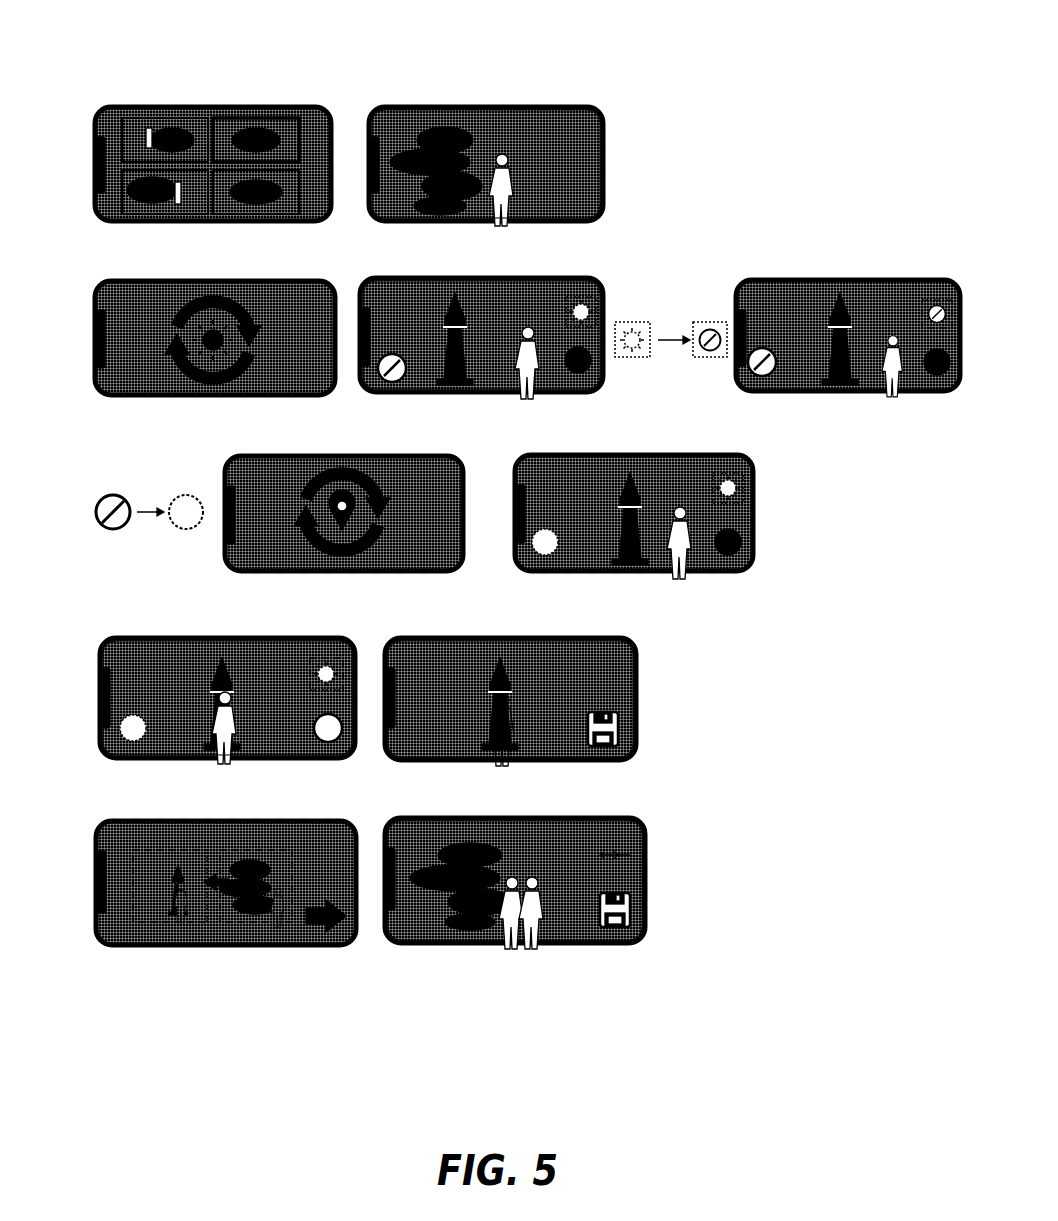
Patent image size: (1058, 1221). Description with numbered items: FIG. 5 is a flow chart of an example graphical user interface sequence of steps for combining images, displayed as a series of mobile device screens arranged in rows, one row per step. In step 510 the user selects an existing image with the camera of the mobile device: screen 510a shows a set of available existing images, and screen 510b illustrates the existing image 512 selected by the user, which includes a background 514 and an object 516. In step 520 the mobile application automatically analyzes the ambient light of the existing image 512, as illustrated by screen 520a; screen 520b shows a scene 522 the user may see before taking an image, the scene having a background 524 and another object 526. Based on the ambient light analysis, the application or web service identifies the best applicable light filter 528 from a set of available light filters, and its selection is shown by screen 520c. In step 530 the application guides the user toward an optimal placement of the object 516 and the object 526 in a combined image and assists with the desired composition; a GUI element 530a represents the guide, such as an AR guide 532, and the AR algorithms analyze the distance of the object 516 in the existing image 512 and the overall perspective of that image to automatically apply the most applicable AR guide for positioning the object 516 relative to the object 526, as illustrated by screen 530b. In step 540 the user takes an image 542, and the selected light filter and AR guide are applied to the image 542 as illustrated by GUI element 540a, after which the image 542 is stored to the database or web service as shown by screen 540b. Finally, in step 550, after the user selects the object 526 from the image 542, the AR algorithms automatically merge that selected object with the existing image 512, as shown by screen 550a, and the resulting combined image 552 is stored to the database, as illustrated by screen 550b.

The step of selecting an existing image 510 is at (90, 182).
The set of available existing images 510a is at (213, 136).
The selected existing image screen 510b is at (486, 136).
The existing image 512 is at (533, 162).
The background 514 is at (455, 133).
The object 516 is at (502, 187).
The step of ambient light analysis 520 is at (88, 348).
The ambient light analysis screen 520a is at (215, 310).
The scene preview screen 520b is at (481, 307).
The light filter selection screen 520c is at (848, 309).
The scene 522 is at (515, 307).
The background 524 is at (467, 310).
The object 526 is at (528, 332).
The light filter 528 is at (647, 325).
The step of guiding object placement 530 is at (86, 522).
The GUI element representing the guide 530a is at (344, 486).
The AR guide application screen 530b is at (634, 488).
The AR guide 532 is at (174, 508).
The step of taking an image 540 is at (92, 712).
The filtered image capture screen 540a is at (227, 674).
The image storing screen 540b is at (502, 670).
The image 542 is at (247, 668).
The step of merging images 550 is at (88, 898).
The merging screen 550a is at (226, 857).
The combined image storing screen 550b is at (515, 854).
The combined image 552 is at (560, 837).